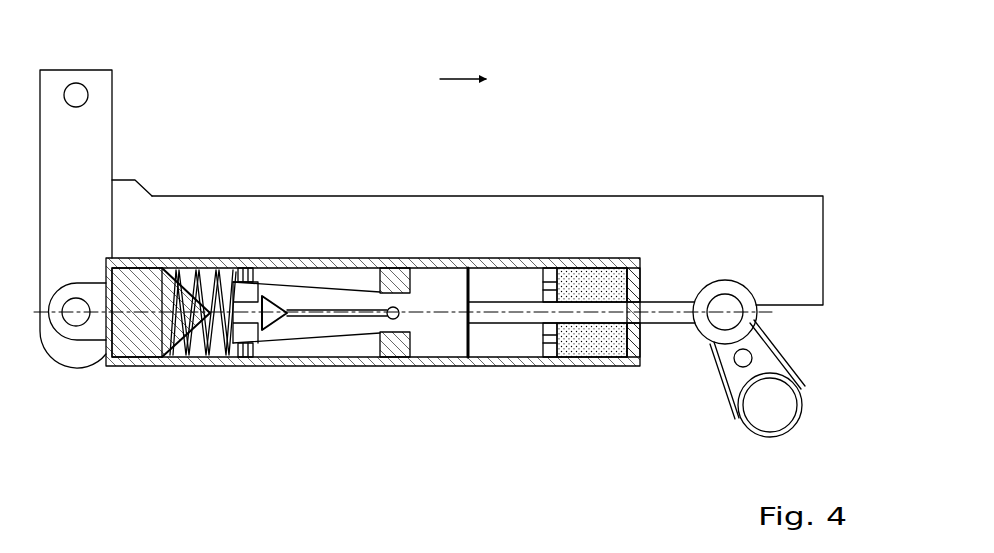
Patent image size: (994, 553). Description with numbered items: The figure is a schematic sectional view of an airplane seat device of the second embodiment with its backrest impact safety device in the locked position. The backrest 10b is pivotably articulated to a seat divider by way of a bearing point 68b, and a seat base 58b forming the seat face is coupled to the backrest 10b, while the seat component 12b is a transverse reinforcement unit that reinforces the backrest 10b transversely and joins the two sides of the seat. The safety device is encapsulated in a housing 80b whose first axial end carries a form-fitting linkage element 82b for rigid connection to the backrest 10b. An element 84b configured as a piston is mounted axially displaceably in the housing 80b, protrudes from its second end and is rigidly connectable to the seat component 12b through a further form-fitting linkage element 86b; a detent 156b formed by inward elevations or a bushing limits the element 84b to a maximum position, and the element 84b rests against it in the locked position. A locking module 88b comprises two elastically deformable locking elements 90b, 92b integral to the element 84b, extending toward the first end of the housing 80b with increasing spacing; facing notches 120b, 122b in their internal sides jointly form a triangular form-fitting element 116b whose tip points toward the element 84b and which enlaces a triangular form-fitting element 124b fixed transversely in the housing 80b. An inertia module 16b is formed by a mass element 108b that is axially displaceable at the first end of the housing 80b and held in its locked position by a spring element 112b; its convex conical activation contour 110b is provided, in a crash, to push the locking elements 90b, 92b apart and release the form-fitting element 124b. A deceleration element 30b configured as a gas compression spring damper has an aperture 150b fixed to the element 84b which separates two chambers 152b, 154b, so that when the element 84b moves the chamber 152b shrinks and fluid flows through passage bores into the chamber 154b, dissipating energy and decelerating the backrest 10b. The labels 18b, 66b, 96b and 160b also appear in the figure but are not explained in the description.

The backrest 10b is at (80, 121).
The seat component 12b is at (760, 437).
The inertia module 16b is at (148, 252).
The lever 18b is at (748, 373).
The deceleration element 30b is at (550, 266).
The seat base 58b is at (768, 223).
The direction arrow 66b is at (453, 79).
The bearing point 68b is at (78, 84).
The housing 80b is at (175, 352).
The linkage element 82b is at (67, 327).
The element 84b is at (667, 319).
The linkage element 86b is at (758, 315).
The locking module 88b is at (336, 250).
The locking element 90b is at (345, 300).
The locking element 92b is at (347, 331).
The end cap 96b is at (638, 291).
The mass element 108b is at (152, 340).
The activation contour 110b is at (185, 337).
The spring element 112b is at (212, 266).
The form-fitting element 116b is at (283, 291).
The notch 120b is at (288, 300).
The notch 122b is at (283, 321).
The form-fitting element 124b is at (267, 331).
The aperture 150b is at (552, 360).
The chamber 152b is at (587, 283).
The chamber 154b is at (492, 290).
The detent 156b is at (425, 256).
The direction of movement 160b is at (805, 426).